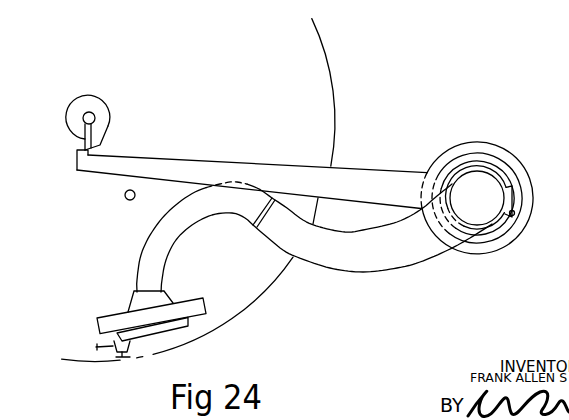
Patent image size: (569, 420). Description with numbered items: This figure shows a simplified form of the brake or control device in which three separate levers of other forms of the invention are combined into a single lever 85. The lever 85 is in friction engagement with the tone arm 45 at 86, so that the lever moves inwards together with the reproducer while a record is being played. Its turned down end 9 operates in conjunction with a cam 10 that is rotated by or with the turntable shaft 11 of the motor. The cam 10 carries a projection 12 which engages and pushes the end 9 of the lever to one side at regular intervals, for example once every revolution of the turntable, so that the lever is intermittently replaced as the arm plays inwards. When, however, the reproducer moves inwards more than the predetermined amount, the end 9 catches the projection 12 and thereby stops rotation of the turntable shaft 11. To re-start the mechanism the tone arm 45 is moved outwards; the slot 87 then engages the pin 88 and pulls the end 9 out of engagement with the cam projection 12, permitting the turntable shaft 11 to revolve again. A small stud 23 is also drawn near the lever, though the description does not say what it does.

The turned down end 9 is at (225, 160).
The cam member 10 is at (97, 103).
The turntable shaft 11 is at (95, 118).
The projection 12 is at (100, 145).
The stud 23 is at (130, 200).
The tone arm 45 is at (372, 255).
The lever 85 is at (262, 172).
The friction engagement 86 is at (490, 148).
The slot 87 is at (514, 193).
The pin 88 is at (515, 218).